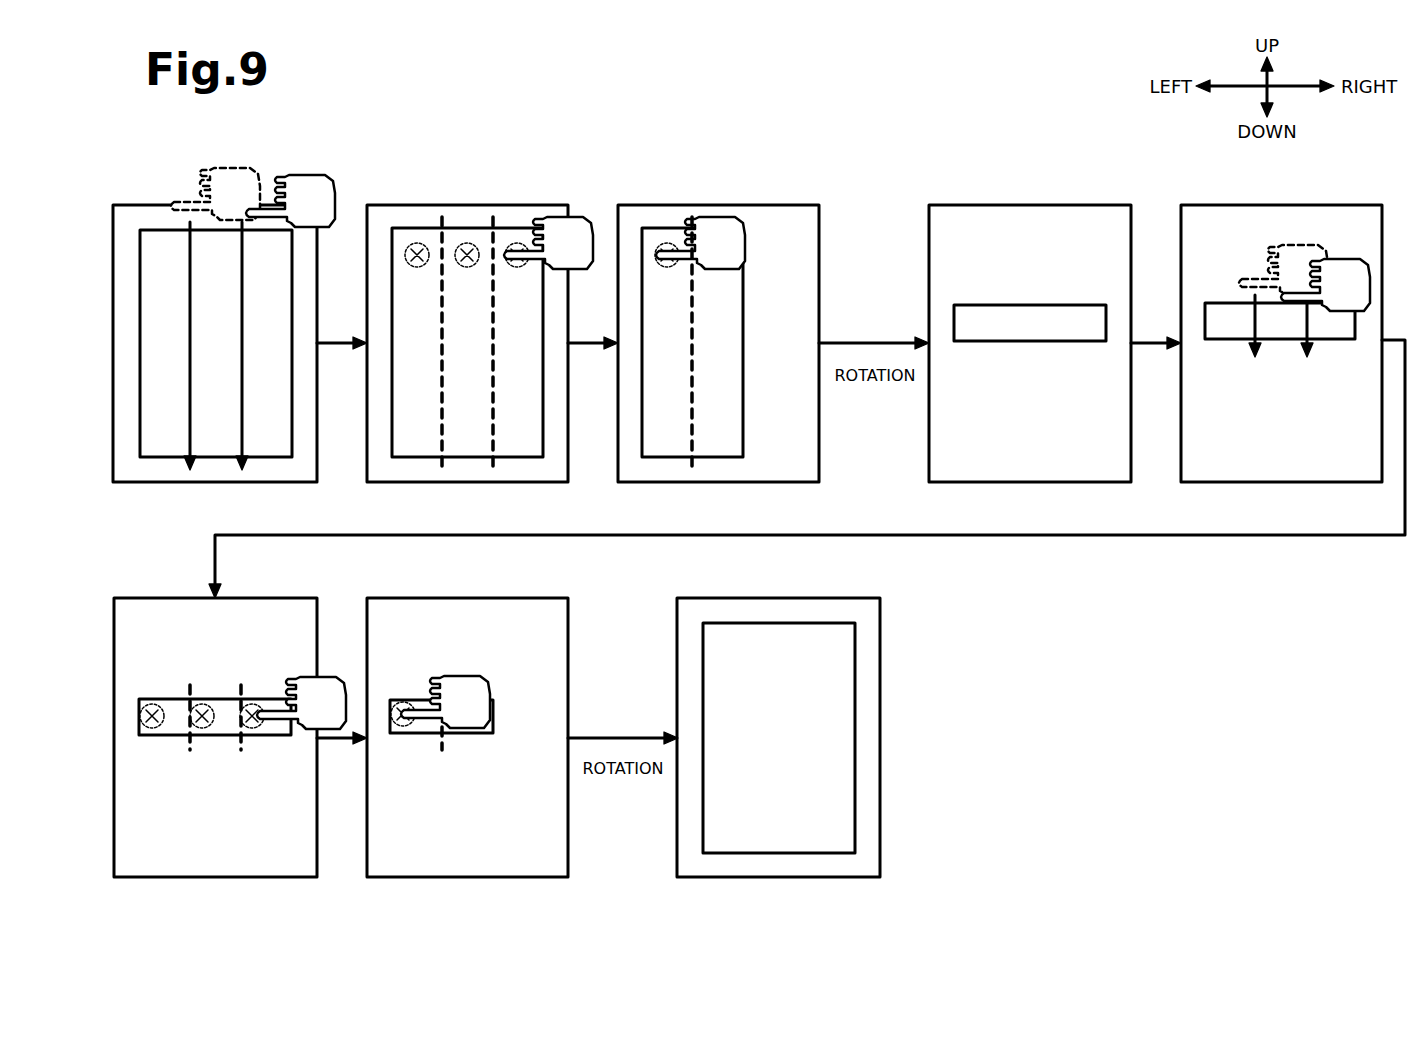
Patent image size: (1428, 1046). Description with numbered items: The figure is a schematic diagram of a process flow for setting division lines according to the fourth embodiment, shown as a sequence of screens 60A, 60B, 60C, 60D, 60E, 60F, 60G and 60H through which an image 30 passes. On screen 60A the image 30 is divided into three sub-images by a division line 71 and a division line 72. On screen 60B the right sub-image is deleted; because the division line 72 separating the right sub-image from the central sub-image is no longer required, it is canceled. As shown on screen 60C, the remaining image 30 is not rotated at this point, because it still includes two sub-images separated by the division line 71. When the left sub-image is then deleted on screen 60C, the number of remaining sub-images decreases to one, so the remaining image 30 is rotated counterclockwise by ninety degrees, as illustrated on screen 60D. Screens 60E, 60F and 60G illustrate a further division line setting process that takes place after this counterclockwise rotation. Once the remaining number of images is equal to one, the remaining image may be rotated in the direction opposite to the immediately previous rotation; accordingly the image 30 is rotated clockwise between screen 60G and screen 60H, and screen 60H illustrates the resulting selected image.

The image 30 is at (170, 230).
The screen 60A is at (133, 205).
The screen 60B is at (401, 205).
The screen 60C is at (644, 205).
The screen 60D is at (967, 205).
The screen 60E is at (1188, 205).
The screen 60F is at (148, 598).
The screen 60G is at (406, 598).
The screen 60H is at (720, 598).
The division line 71 is at (447, 455).
The division line 72 is at (499, 455).